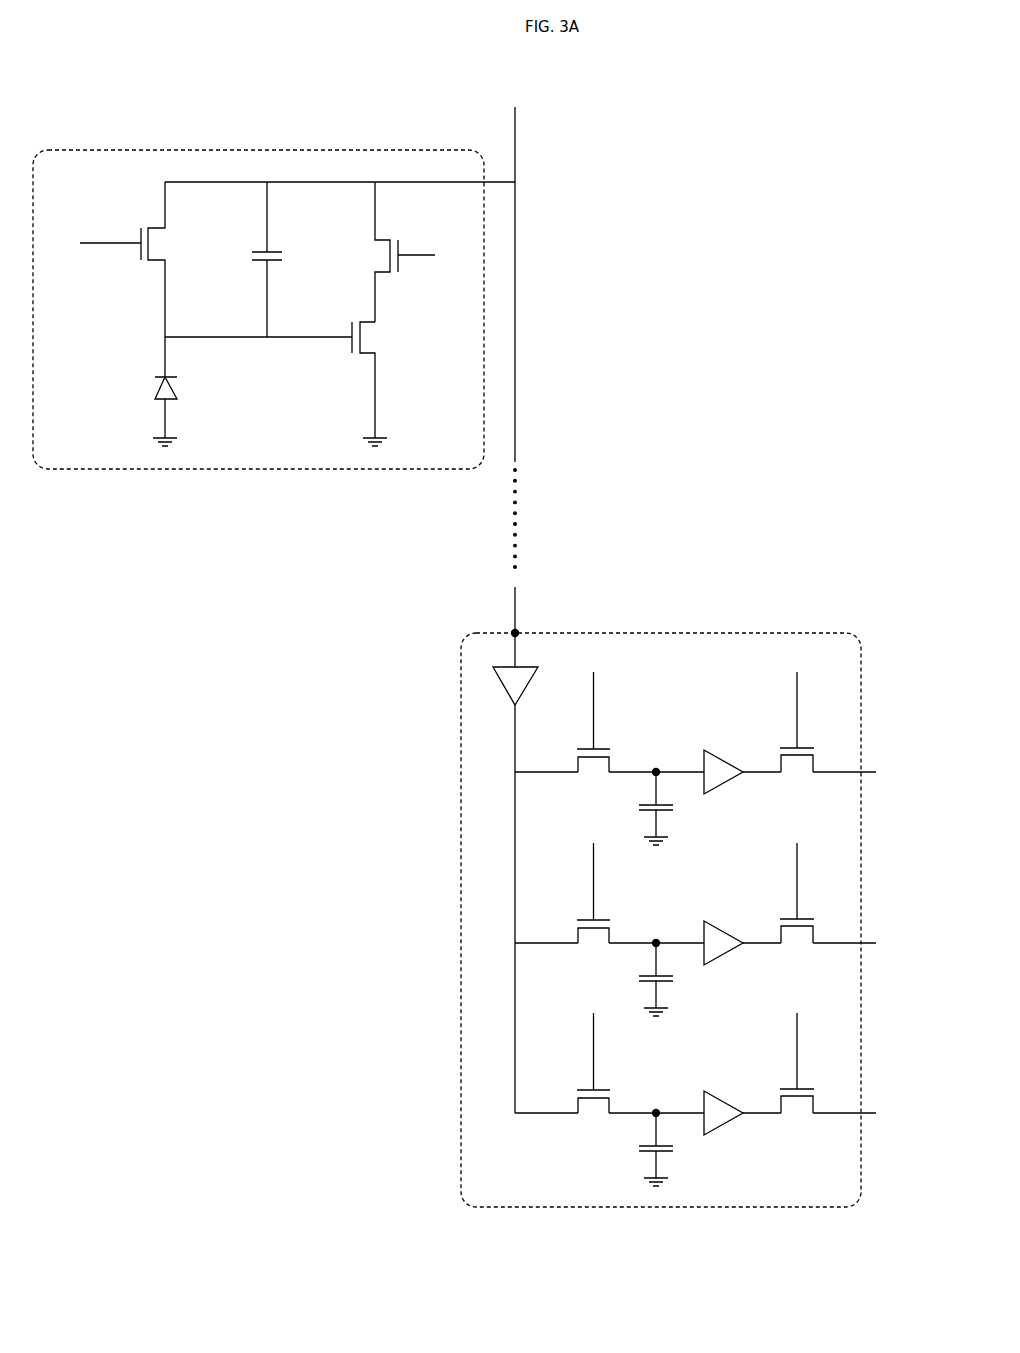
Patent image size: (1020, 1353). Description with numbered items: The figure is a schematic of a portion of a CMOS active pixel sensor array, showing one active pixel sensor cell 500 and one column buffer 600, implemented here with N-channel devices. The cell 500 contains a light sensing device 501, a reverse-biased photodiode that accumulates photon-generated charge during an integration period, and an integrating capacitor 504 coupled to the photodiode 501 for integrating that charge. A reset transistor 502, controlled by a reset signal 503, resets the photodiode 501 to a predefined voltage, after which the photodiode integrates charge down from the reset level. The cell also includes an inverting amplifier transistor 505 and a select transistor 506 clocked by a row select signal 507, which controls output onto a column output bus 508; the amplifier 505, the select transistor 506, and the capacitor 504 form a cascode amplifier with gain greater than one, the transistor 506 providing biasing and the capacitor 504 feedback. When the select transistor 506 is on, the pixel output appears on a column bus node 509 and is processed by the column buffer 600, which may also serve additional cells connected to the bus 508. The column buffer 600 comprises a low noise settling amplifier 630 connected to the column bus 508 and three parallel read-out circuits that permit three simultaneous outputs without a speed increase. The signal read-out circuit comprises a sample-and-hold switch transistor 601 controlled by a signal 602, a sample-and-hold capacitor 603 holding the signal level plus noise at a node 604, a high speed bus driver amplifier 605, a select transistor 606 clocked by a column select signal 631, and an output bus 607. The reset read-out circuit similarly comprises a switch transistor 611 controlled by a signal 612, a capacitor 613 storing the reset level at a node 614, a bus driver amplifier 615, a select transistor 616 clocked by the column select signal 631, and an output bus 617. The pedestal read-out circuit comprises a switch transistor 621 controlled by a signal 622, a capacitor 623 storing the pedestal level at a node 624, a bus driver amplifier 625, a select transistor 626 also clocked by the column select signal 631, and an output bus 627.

The active pixel sensor cell 500 is at (260, 150).
The light sensing device 501 is at (152, 391).
The reset transistor 502 is at (161, 259).
The reset signal 503 is at (93, 245).
The integrating capacitor 504 is at (251, 259).
The inverting amplifier transistor 505 is at (371, 384).
The select transistor 506 is at (376, 252).
The row select signal 507 is at (434, 255).
The column output bus 508 is at (520, 361).
The column bus node 509 is at (529, 625).
The column buffer 600 is at (460, 920).
The sample-and-hold switch transistor 601 is at (593, 765).
The sample-and-hold signal 602 is at (595, 698).
The sample-and-hold capacitor 603 is at (670, 808).
The node 604 is at (656, 762).
The high speed bus driver amplifier 605 is at (726, 767).
The select transistor 606 is at (797, 764).
The output bus 607 is at (864, 772).
The sample-and-hold switch transistor 611 is at (593, 936).
The reset sample-and-hold signal 612 is at (595, 869).
The reset sample-and-hold capacitor 613 is at (670, 979).
The node 614 is at (656, 933).
The high speed bus driver amplifier 615 is at (726, 938).
The select transistor 616 is at (797, 935).
The output bus 617 is at (863, 943).
The sample-and-hold switch transistor 621 is at (593, 1106).
The pedestal sample-and-hold signal 622 is at (595, 1044).
The pedestal sample-and-hold capacitor 623 is at (672, 1149).
The node 624 is at (656, 1103).
The high speed bus driver amplifier 625 is at (727, 1105).
The select transistor 626 is at (797, 1105).
The output bus 627 is at (864, 1113).
The low noise settling amplifier 630 is at (505, 669).
The column select signal 631 is at (797, 868).